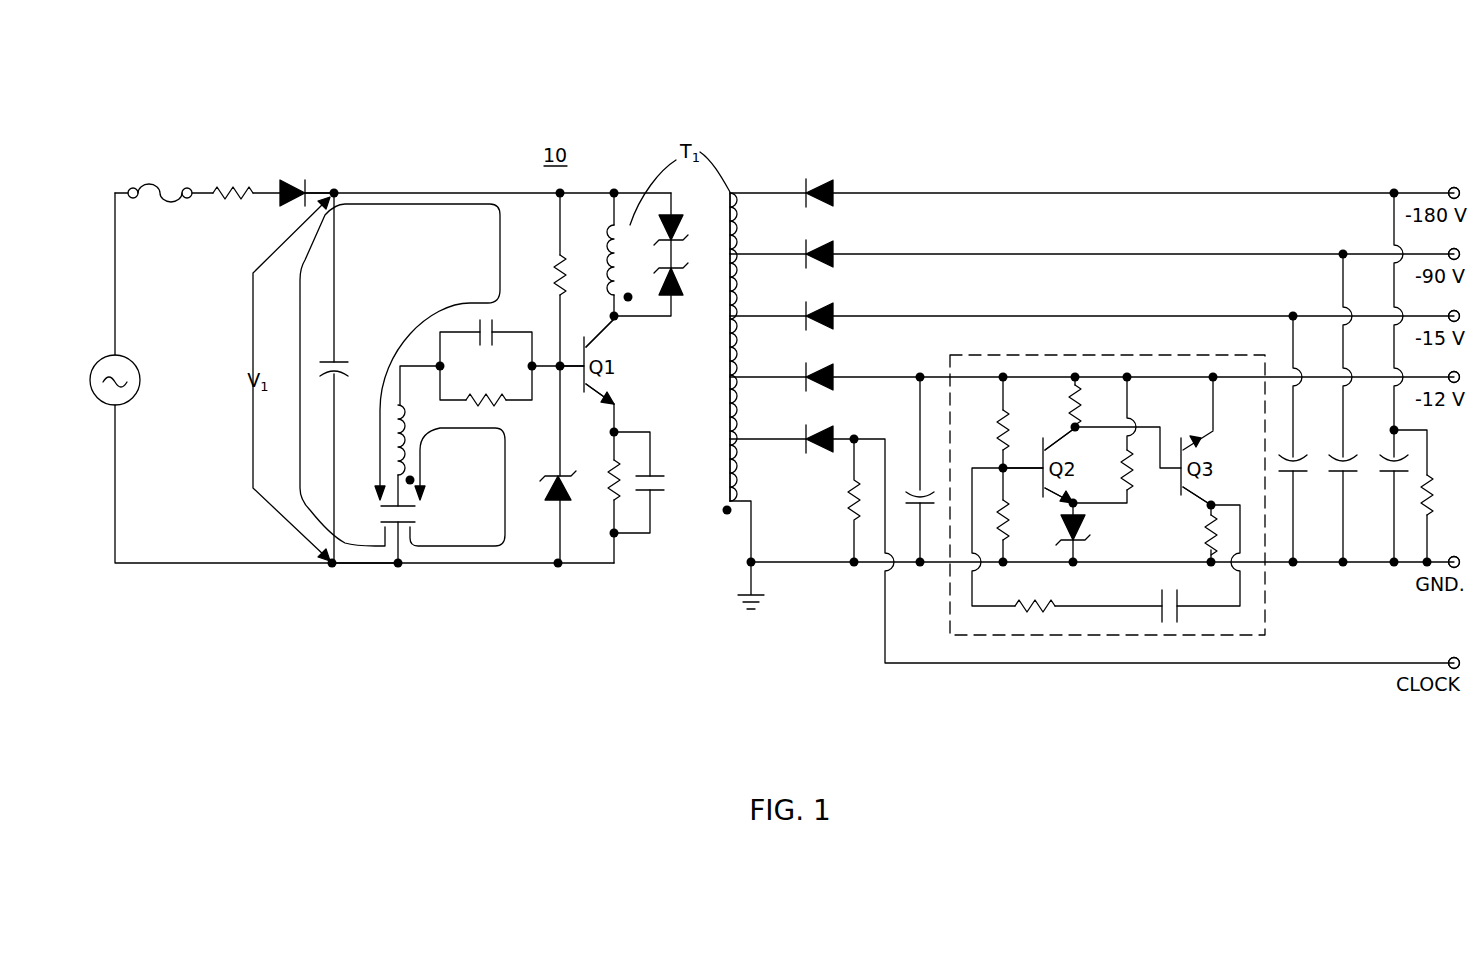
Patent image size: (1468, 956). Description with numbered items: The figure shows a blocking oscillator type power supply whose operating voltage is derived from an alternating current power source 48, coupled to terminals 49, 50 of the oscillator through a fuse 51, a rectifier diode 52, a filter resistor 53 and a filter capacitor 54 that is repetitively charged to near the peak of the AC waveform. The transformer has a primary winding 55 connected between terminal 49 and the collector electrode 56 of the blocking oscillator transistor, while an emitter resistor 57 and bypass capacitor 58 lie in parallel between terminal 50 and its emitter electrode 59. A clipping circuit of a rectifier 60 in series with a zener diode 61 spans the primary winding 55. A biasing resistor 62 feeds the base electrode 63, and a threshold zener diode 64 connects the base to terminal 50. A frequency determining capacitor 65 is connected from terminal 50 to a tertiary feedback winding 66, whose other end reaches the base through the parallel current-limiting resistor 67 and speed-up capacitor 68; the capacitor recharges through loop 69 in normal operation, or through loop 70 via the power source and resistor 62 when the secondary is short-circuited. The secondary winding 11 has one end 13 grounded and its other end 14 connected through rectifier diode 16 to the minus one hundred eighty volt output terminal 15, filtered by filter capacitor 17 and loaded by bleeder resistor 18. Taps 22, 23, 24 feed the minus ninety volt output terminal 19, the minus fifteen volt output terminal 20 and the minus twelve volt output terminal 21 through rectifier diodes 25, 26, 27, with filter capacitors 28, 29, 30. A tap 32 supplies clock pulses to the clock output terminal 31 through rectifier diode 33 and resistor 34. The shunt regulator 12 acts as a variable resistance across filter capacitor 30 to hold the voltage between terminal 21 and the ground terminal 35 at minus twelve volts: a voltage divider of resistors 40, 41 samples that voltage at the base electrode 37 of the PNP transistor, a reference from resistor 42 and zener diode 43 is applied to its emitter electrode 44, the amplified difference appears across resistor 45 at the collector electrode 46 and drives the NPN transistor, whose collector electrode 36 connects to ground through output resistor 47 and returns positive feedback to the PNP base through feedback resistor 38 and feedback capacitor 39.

The secondary winding 11 is at (727, 336).
The shunt regulator 12 is at (936, 371).
The one end of secondary winding 13 is at (756, 508).
The other end of secondary winding 14 is at (744, 190).
The −180 volt output terminal 15 is at (1449, 188).
The rectifier diode 16 is at (844, 186).
The filter capacitor 17 is at (1384, 458).
The bleeder resistor 18 is at (1434, 486).
The −90 volt output terminal 19 is at (1448, 251).
The −15 volt output terminal 20 is at (1448, 313).
The −12 volt output terminal 21 is at (1448, 374).
The tap 22 is at (740, 251).
The tap 23 is at (740, 312).
The tap 24 is at (740, 373).
The rectifier diode 25 is at (844, 250).
The rectifier diode 26 is at (844, 312).
The rectifier diode 27 is at (844, 373).
The filter capacitor 28 is at (1334, 458).
The filter capacitor 29 is at (1299, 480).
The filter capacitor 30 is at (913, 483).
The clock output terminal 31 is at (1448, 657).
The tap 32 is at (740, 435).
The rectifier diode 33 is at (836, 435).
The resistor 34 is at (846, 507).
The ground terminal 35 is at (1453, 554).
The collector electrode of Q3 36 is at (1204, 496).
The base electrode of Q2 37 is at (1037, 461).
The feedback resistor 38 is at (1030, 602).
The feedback capacitor 39 is at (1155, 602).
The resistor 40 is at (996, 430).
The resistor 41 is at (1015, 521).
The resistor 42 is at (1134, 471).
The zener diode 43 is at (1086, 527).
The emitter electrode of Q2 44 is at (1065, 493).
The resistor 45 is at (1068, 407).
The collector electrode of Q2 46 is at (1065, 438).
The output resistor 47 is at (1204, 539).
The alternating current power source 48 is at (136, 354).
The terminal 49 is at (400, 190).
The terminal 50 is at (352, 567).
The fuse 51 is at (160, 185).
The rectifier diode 52 is at (292, 185).
The filter resistor 53 is at (232, 185).
The filter capacitor 54 is at (347, 352).
The primary winding 55 is at (609, 258).
The collector electrode of Q1 56 is at (614, 334).
The emitter resistor 57 is at (602, 490).
The bypass capacitor 58 is at (659, 470).
The emitter electrode of Q1 59 is at (618, 396).
The rectifier 60 is at (681, 292).
The zener diode 61 is at (681, 227).
The biasing resistor 62 is at (554, 270).
The base electrode of Q1 63 is at (576, 358).
The zener diode 64 is at (567, 476).
The frequency determining capacitor 65 is at (420, 512).
The tertiary feedback winding 66 is at (410, 441).
The current-limiting resistor 67 is at (491, 393).
The speed-up capacitor 68 is at (505, 326).
The loop 69 is at (485, 436).
The loop 70 is at (362, 212).